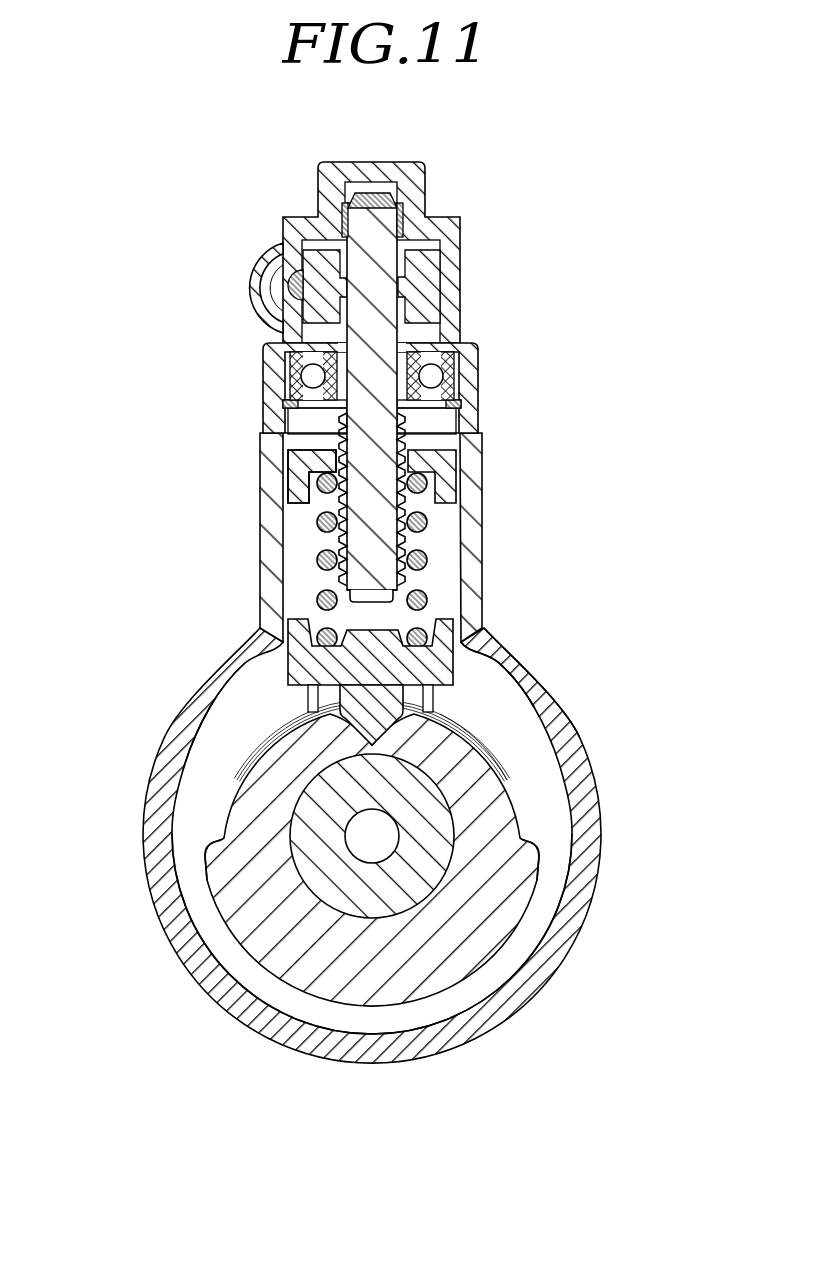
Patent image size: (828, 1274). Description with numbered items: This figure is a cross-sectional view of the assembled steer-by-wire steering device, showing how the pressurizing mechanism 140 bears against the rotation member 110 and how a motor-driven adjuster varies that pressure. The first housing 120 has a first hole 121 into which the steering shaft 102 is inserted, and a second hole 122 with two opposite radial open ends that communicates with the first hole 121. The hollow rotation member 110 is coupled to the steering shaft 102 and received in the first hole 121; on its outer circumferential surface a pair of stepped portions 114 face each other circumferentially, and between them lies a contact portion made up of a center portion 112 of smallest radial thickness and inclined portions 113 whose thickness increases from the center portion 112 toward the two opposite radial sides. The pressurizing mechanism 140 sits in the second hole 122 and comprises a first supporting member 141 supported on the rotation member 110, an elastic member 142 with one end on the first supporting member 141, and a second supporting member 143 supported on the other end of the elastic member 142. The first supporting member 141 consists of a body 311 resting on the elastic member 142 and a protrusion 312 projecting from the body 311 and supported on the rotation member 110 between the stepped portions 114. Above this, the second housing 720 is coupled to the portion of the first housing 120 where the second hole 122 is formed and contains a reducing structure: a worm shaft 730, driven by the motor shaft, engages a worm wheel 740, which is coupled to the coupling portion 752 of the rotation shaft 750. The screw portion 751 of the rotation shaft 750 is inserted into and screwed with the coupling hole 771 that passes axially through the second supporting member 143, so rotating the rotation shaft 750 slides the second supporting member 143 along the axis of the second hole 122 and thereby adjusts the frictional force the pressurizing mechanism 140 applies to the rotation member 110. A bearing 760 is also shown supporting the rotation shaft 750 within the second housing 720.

The steering shaft 102 is at (372, 883).
The rotation member 110 is at (310, 982).
The center portion 112 is at (320, 747).
The inclined portions 113 is at (262, 792).
The stepped portions 114 is at (210, 838).
The first housing 120 is at (440, 1042).
The first hole 121 is at (490, 978).
The second hole 122 is at (300, 572).
The pressurizing mechanism 140 is at (440, 556).
The first supporting member 141 is at (628, 640).
The elastic member 142 is at (340, 590).
The second supporting member 143 is at (298, 473).
The body 311 is at (460, 658).
The protrusion 312 is at (440, 714).
The second housing 720 is at (368, 168).
The worm shaft 730 is at (305, 275).
The worm wheel 740 is at (315, 305).
The rotation shaft 750 is at (378, 373).
The screw portion 751 is at (383, 502).
The coupling portion 752 is at (383, 268).
The bearing 760 is at (310, 373).
The coupling hole 771 is at (306, 497).